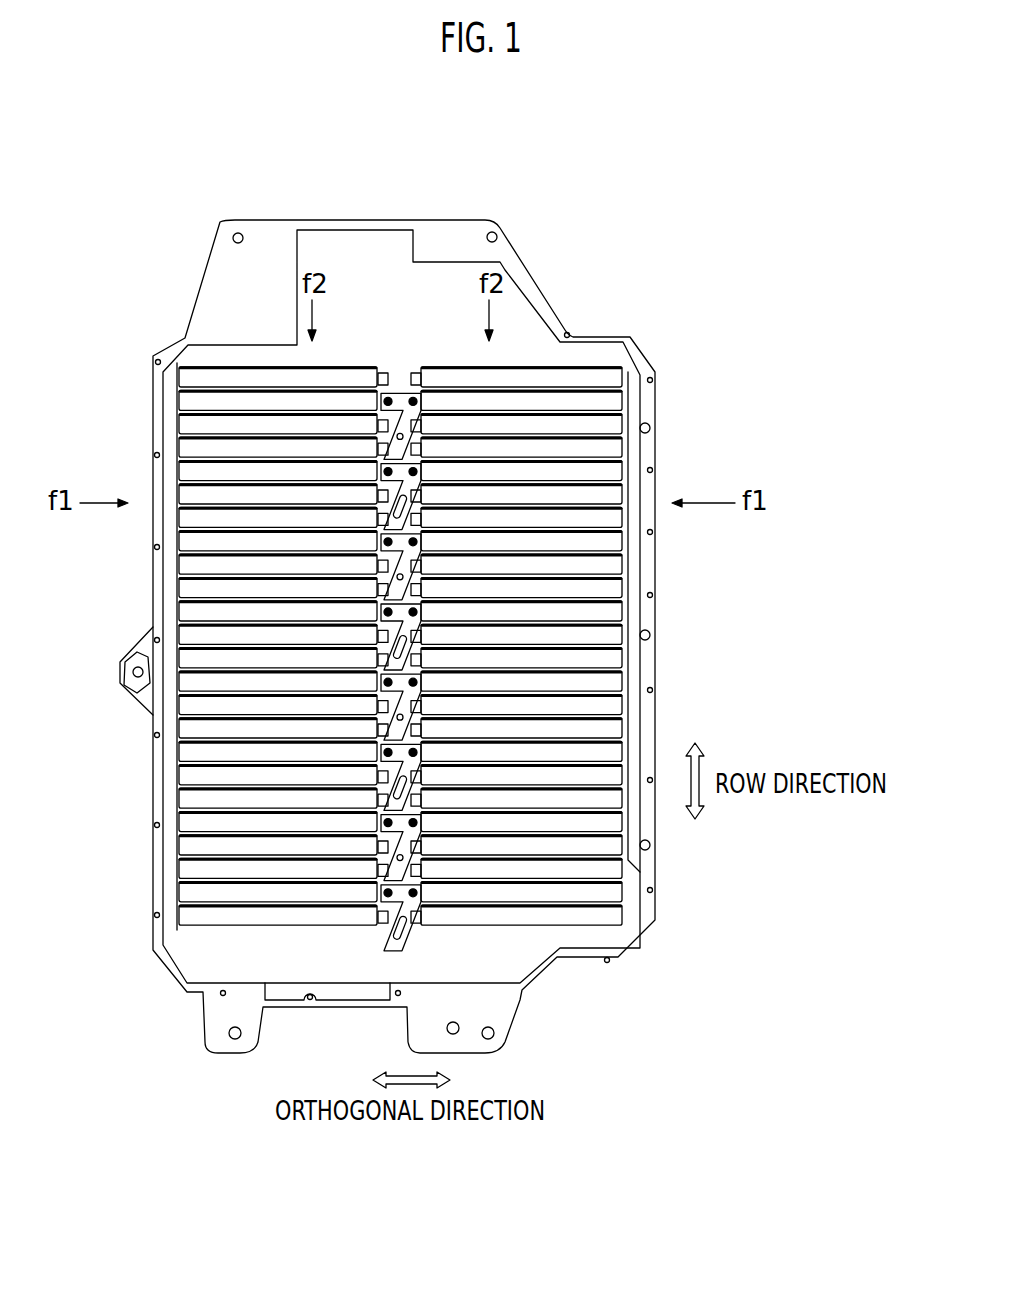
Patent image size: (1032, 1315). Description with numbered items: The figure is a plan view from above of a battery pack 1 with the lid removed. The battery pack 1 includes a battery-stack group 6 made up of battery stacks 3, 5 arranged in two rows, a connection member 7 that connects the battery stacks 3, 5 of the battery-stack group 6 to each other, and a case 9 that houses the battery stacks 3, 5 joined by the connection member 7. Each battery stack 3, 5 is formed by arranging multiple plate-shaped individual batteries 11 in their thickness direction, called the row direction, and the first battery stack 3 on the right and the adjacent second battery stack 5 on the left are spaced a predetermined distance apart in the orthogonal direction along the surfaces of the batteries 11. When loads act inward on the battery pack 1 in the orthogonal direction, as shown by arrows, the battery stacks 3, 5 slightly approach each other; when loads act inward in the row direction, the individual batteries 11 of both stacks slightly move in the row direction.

The battery pack 1 is at (557, 178).
The first battery stack 3 is at (525, 582).
The second battery stack 5 is at (213, 357).
The battery-stack group 6 is at (381, 582).
The connection member 7 is at (401, 396).
The case 9 is at (340, 270).
The individual battery 11 is at (603, 374).